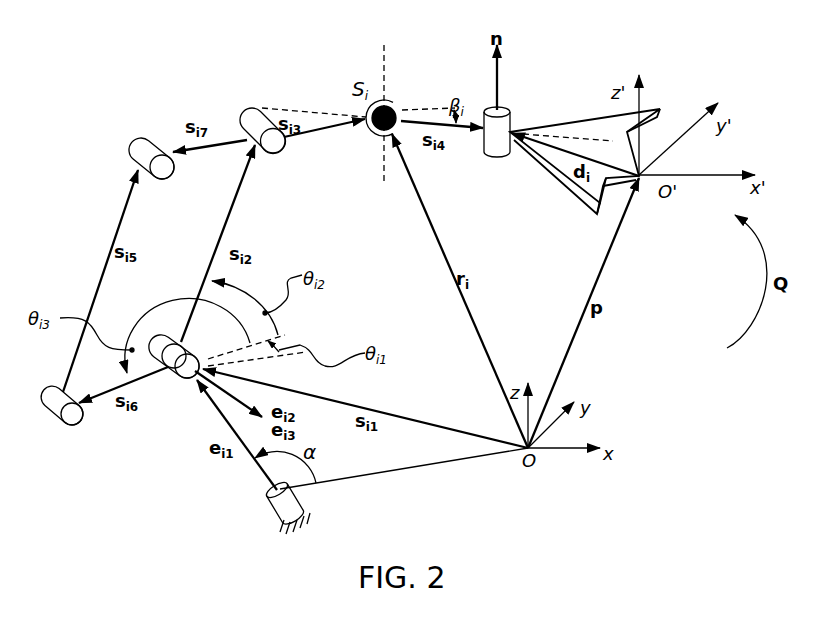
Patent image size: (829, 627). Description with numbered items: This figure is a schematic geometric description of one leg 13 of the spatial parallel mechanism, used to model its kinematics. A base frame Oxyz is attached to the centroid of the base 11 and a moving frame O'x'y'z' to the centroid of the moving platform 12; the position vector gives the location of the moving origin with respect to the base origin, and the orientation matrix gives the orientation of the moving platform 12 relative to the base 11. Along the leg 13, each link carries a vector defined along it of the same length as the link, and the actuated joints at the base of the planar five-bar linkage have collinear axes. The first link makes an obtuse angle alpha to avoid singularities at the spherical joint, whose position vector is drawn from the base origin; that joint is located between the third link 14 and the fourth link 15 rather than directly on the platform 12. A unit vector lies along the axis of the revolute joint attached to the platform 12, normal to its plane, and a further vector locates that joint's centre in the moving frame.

The base 11 is at (373, 532).
The moving platform 12 is at (568, 118).
The leg 13 is at (324, 141).
The link l_i4 14 is at (442, 113).
The link l_i5 15 is at (100, 281).